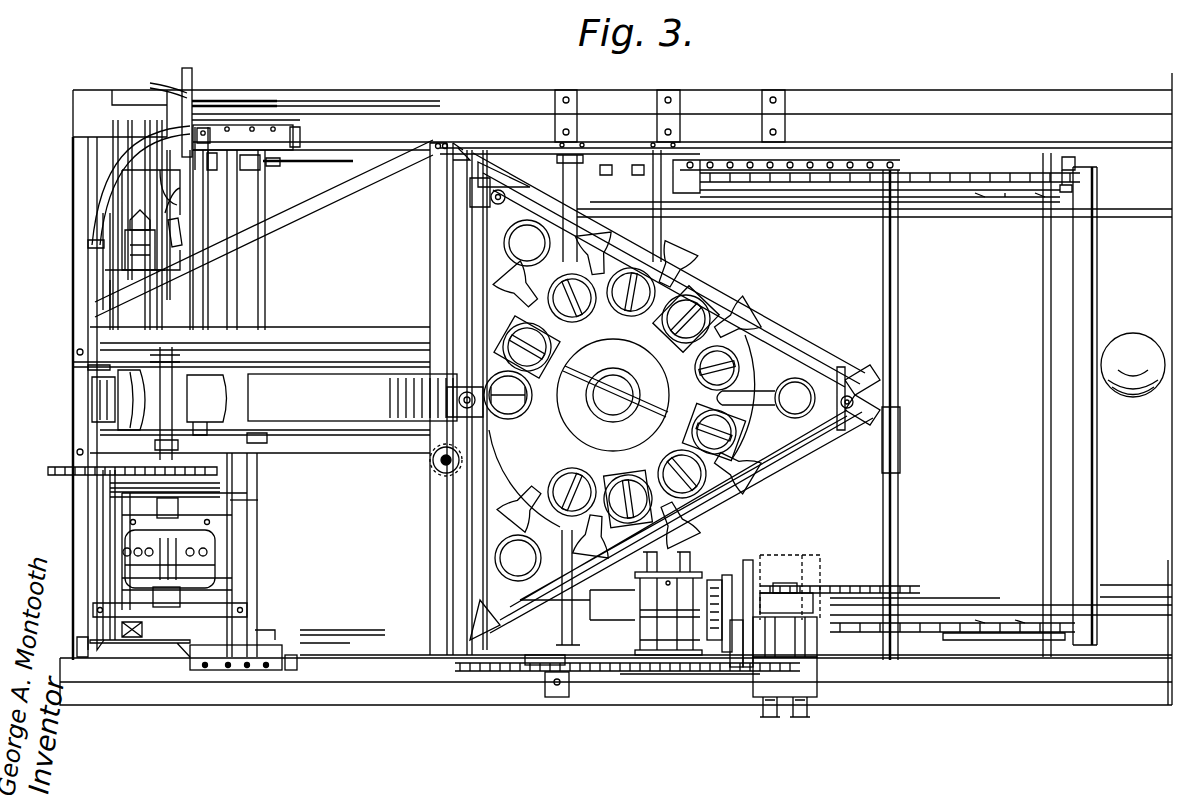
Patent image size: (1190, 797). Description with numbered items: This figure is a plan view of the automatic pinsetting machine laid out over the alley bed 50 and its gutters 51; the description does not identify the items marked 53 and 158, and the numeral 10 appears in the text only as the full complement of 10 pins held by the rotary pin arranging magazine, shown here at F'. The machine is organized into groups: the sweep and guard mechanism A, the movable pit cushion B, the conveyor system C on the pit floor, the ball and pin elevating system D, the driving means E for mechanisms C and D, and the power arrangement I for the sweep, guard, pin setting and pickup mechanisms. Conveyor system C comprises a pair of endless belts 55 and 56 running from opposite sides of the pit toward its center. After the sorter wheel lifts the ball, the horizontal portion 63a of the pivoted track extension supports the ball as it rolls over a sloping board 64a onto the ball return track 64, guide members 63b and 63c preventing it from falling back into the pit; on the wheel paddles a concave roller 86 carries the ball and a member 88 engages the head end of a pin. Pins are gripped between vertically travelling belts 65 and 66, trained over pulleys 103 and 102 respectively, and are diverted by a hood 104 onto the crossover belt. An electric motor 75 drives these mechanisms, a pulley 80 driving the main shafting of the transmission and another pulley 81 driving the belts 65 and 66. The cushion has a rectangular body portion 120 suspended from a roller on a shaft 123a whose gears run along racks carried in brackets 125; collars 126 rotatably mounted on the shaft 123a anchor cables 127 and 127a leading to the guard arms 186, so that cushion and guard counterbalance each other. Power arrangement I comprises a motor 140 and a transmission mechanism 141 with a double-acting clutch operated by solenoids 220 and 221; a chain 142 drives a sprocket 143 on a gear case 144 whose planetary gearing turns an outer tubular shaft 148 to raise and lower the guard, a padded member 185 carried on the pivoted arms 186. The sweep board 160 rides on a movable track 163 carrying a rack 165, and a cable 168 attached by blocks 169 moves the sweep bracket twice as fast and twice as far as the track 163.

The drive housing 10 is at (345, 412).
The alley bed 50 is at (1160, 303).
The gutters 51 is at (1135, 602).
The container 53 is at (1125, 397).
The endless belt 55 is at (360, 584).
The endless belt 56 is at (362, 266).
The horizontal portion 63a is at (128, 205).
The guide member 63b is at (100, 178).
The guide member 63c is at (184, 238).
The ball return track 64 is at (262, 101).
The sloping platform 64a is at (151, 220).
The vertically traveling belt 65 is at (100, 405).
The vertically traveling belt 66 is at (178, 400).
The electric motor 75 is at (182, 575).
The pulley 80 is at (220, 490).
The pulley 81 is at (58, 478).
The roller 86 is at (128, 262).
The member 88 is at (140, 210).
The pulley 102 is at (172, 372).
The pulley 103 is at (92, 372).
The hood 104 is at (122, 392).
The body portion 120 is at (258, 517).
The shaft 123a is at (245, 397).
The brackets 125 is at (295, 135).
The collar 126 is at (262, 162).
The cable 127 is at (312, 163).
The cable 127a is at (338, 632).
The motor 140 is at (818, 568).
The transmission mechanism 141 is at (783, 640).
The chain 142 is at (845, 580).
The sprocket 143 is at (908, 588).
The gear case 144 is at (915, 596).
The outer tubular shaft 148 is at (900, 458).
The conveyor chain 158 is at (798, 164).
The board 160 is at (1045, 486).
The movable track 163 is at (1005, 197).
The rack 165 is at (775, 184).
The cable 168 is at (792, 204).
The blocks 169 is at (980, 197).
The padded member 185 is at (1092, 484).
The pivoted arms 186 is at (1000, 173).
The solenoid 220 is at (748, 662).
The solenoid 221 is at (802, 580).
The sweep and guard mechanism A is at (1103, 253).
The movable pit cushion B is at (264, 554).
The conveyor system C is at (345, 297).
The ball and pin elevating system D is at (113, 295).
The driving means E is at (128, 572).
The turret section F' is at (727, 280).
The power arrangement I is at (779, 545).